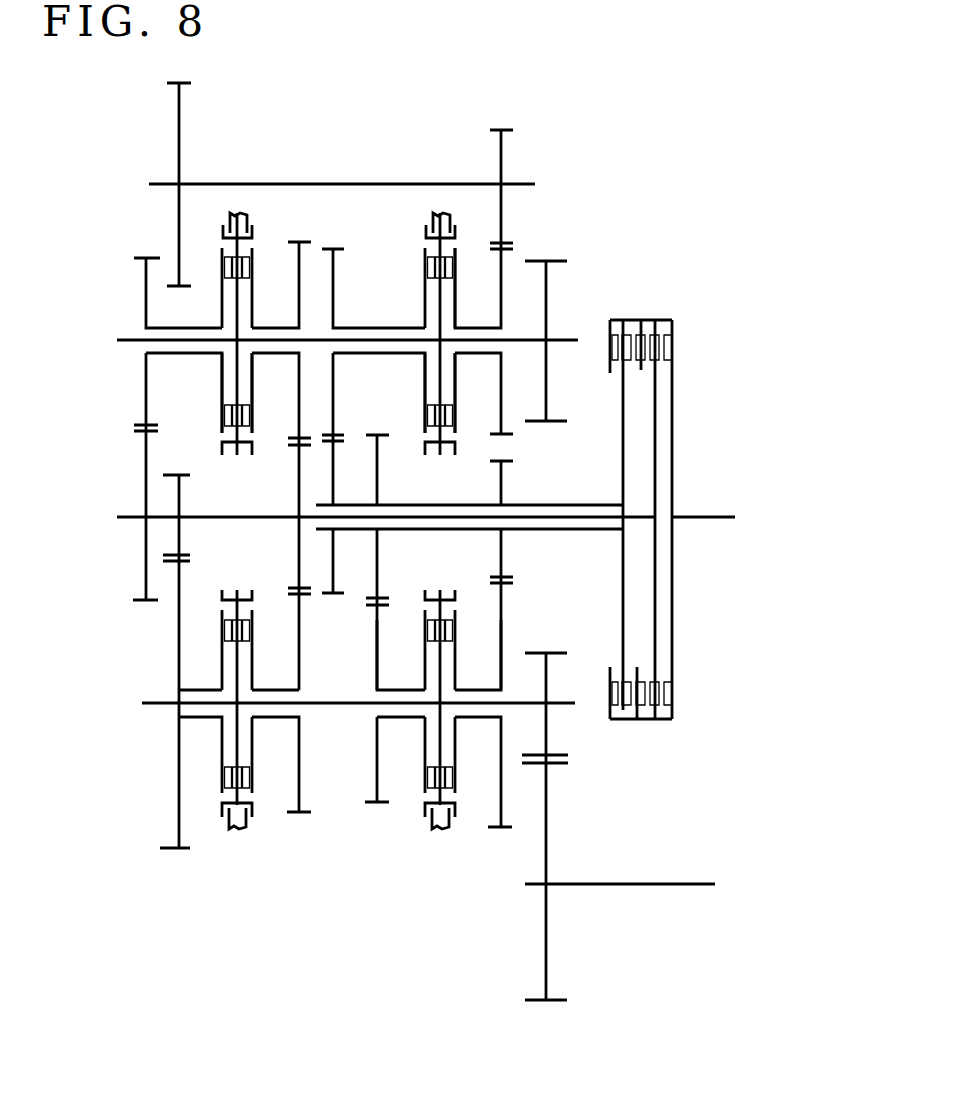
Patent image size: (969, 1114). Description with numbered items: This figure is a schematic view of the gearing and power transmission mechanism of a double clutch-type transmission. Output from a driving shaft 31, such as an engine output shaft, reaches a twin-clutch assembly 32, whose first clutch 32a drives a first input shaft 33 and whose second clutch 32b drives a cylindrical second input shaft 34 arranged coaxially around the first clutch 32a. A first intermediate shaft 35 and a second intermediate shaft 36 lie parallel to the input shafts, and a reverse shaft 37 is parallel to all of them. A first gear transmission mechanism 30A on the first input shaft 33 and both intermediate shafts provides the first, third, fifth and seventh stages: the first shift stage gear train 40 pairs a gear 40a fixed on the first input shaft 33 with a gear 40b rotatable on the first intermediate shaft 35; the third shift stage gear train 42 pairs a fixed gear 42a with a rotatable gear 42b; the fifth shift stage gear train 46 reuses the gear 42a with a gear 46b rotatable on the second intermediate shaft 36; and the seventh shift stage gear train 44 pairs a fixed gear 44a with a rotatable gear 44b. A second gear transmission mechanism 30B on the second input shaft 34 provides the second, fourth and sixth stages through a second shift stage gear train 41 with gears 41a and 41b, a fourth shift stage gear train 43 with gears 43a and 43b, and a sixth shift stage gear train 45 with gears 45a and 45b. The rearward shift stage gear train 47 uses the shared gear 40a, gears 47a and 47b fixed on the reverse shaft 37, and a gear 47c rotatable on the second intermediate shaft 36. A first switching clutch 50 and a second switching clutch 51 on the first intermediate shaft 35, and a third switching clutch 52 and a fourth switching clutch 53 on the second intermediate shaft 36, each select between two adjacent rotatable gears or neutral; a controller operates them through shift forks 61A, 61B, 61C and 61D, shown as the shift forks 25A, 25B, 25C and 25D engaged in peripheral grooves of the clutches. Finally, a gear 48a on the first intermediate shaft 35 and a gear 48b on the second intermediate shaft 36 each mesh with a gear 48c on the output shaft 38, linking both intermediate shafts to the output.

The shift fork 25A is at (231, 857).
The shift fork 25B is at (432, 860).
The shift fork 25C is at (274, 181).
The shift fork 25D is at (407, 240).
The first gear transmission mechanism 30A is at (237, 795).
The second gear transmission mechanism 30B is at (420, 795).
The driving shaft 31 is at (693, 517).
The twin-clutch assembly 32 is at (668, 496).
The first clutch 32a is at (660, 328).
The second clutch 32b is at (622, 331).
The first input shaft 33 is at (221, 514).
The second input shaft 34 is at (545, 503).
The first intermediate shaft 35 is at (153, 705).
The second intermediate shaft 36 is at (132, 337).
The reverse shaft 37 is at (347, 185).
The output shaft 38 is at (635, 886).
The first shift stage gear train 40 is at (177, 864).
The gear 40a is at (177, 540).
The gear 40b is at (173, 768).
The second shift stage gear train 41 is at (501, 844).
The gear 41a is at (501, 555).
The gear 41b is at (498, 622).
The third shift stage gear train 42 is at (298, 836).
The gear 42a is at (298, 537).
The gear 42b is at (295, 747).
The fourth shift stage gear train 43 is at (378, 822).
The gear 43a is at (377, 572).
The gear 43b is at (377, 632).
The seventh shift stage gear train 44 is at (150, 237).
The gear 44a is at (145, 448).
The gear 44b is at (147, 385).
The sixth shift stage gear train 45 is at (346, 231).
The gear 45a is at (333, 487).
The gear 45b is at (333, 398).
The fifth shift stage gear train 46 is at (300, 224).
The gear 46b is at (298, 410).
The rearward shift stage gear train 47 is at (370, 253).
The gear 47a is at (179, 138).
The gear 47b is at (503, 158).
The gear 47c is at (501, 281).
The gear 48a is at (543, 733).
The gear 48b is at (547, 363).
The gear 48c is at (546, 833).
The first switching clutch 50 is at (218, 750).
The second switching clutch 51 is at (419, 753).
The third switching clutch 52 is at (257, 289).
The fourth switching clutch 53 is at (427, 325).
The first shift fork 61A is at (206, 806).
The second shift fork 61B is at (432, 860).
The third shift fork 61C is at (274, 193).
The fourth shift fork 61D is at (407, 243).